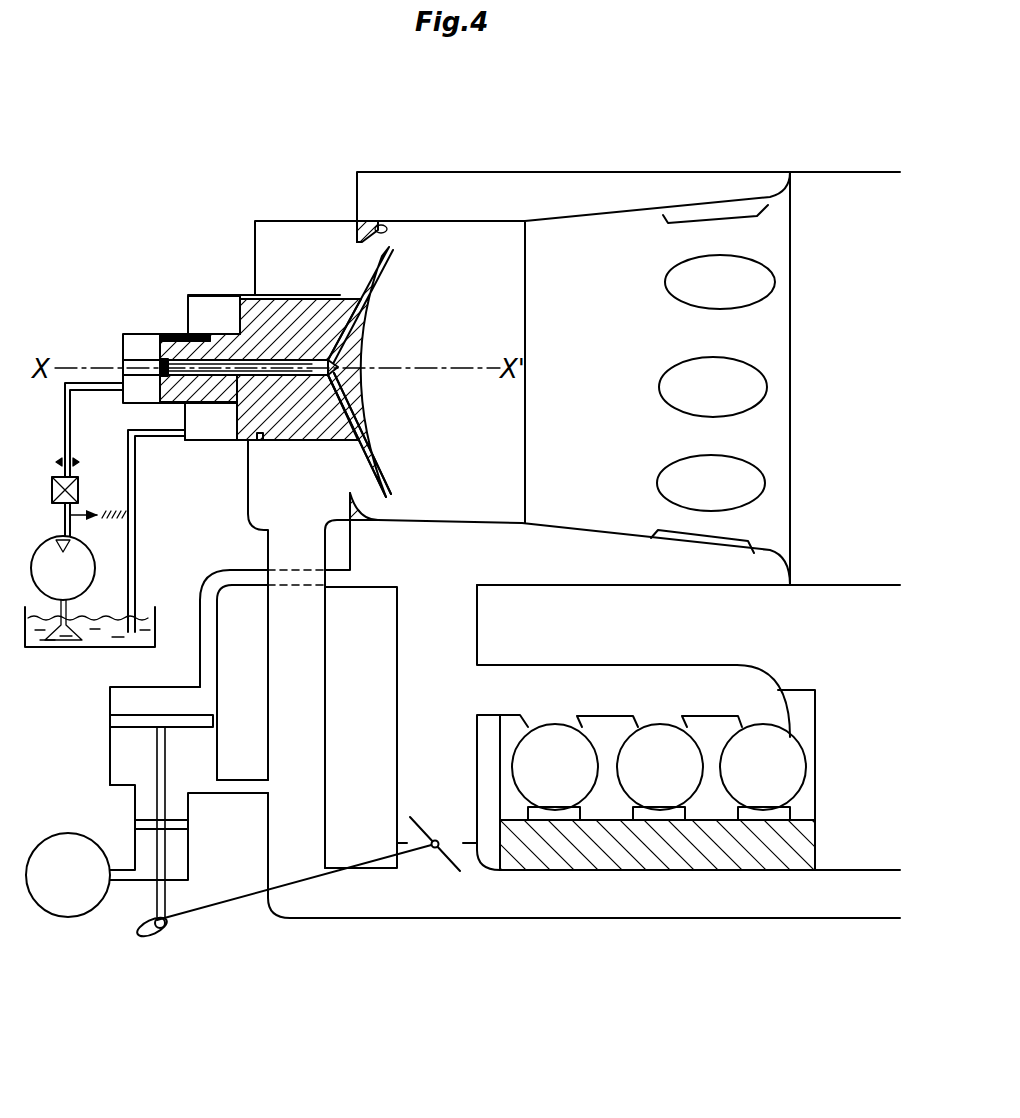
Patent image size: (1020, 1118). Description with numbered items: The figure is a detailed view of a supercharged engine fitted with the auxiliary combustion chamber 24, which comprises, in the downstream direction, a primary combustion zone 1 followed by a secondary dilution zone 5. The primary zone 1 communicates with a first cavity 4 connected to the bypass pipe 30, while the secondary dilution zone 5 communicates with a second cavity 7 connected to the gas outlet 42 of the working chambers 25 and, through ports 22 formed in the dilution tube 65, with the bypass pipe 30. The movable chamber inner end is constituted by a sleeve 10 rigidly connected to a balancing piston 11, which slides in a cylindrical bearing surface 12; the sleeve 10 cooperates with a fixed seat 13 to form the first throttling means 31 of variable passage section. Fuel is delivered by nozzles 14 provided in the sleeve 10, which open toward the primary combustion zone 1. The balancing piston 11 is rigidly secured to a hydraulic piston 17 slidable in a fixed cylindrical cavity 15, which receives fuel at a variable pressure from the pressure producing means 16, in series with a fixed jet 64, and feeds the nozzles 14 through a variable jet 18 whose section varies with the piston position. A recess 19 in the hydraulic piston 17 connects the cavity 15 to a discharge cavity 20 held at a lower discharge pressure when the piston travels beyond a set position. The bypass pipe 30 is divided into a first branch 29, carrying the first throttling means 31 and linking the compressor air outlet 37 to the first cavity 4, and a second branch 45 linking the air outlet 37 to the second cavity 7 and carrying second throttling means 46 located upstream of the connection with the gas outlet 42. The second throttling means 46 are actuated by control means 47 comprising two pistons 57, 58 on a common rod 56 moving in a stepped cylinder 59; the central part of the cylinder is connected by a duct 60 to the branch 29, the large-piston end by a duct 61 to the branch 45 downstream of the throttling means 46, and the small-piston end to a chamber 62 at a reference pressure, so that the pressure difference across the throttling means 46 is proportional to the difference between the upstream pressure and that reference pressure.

The primary combustion zone 1 is at (461, 278).
The first cavity 4 is at (278, 238).
The secondary dilution zone 5 is at (818, 312).
The second cavity 7 is at (528, 578).
The sleeve 10 is at (353, 341).
The balancing piston 11 is at (319, 430).
The cylindrical bearing surface 12 is at (277, 447).
The fixed seat 13 is at (392, 236).
The nozzles 14 is at (378, 472).
The fixed cylindrical cavity 15 is at (140, 340).
The means for producing variable fuel pressure 16 is at (49, 494).
The hydraulic piston 17 is at (222, 392).
The variable jet 18 is at (160, 334).
The recess 19 is at (183, 333).
The discharge cavity 20 is at (203, 428).
The ports 22 is at (756, 469).
The auxiliary combustion chamber 24 is at (340, 200).
The working chambers 25 is at (568, 783).
The first branch 29 is at (307, 717).
The bypass pipe 30 is at (349, 927).
The first throttling means 31 is at (368, 503).
The air outlet 37 is at (860, 905).
The gas outlet 42 is at (633, 696).
The second branch 45 is at (437, 769).
The second throttling means 46 is at (447, 876).
The control means 47 is at (100, 749).
The rod 56 is at (168, 857).
The piston of small diameter 57 is at (142, 825).
The piston of large diameter 58 is at (111, 720).
The stepped cylinder 59 is at (113, 775).
The duct 60 is at (236, 787).
The duct 61 is at (210, 654).
The chamber 62 is at (78, 918).
The fixed jet 64 is at (73, 461).
The dilution tube 65 is at (620, 208).